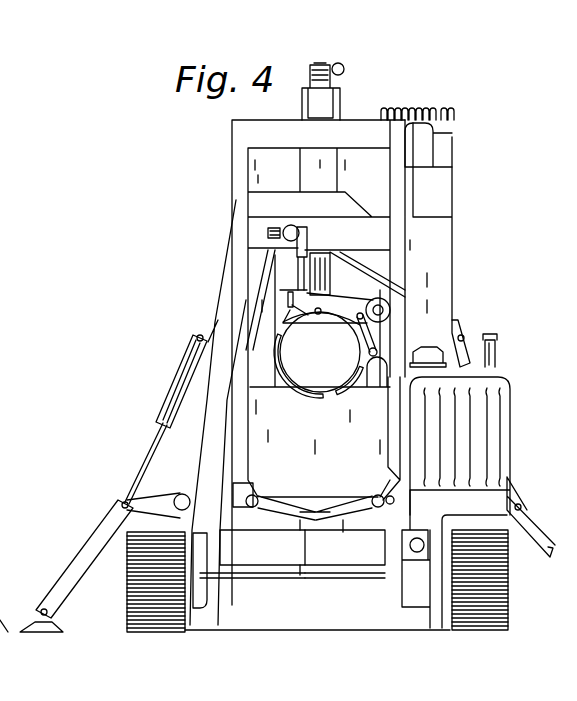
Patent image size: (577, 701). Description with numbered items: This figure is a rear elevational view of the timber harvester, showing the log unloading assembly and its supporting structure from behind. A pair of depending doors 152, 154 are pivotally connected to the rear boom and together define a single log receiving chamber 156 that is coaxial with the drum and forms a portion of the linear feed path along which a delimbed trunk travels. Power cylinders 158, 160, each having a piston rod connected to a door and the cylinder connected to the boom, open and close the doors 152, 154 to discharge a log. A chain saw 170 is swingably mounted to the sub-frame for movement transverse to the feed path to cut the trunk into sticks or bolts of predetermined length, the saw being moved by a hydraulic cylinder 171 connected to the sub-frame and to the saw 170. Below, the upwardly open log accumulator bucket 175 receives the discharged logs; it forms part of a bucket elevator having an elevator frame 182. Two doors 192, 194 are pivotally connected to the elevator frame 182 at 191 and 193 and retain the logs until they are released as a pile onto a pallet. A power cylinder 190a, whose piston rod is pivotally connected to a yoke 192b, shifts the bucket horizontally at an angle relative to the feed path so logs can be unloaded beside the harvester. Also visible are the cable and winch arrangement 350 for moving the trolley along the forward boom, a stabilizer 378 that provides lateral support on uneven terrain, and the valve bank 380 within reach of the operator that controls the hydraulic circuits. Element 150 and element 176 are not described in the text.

The cable and winch arrangement 350 is at (338, 63).
The valve bank 380 is at (430, 92).
The elevator frame 182 is at (240, 158).
The power cylinder 190a is at (293, 216).
The spindle assembly 150 is at (334, 262).
The yoke 192b is at (383, 233).
The power cylinder 160 is at (380, 287).
The chain saw 170 is at (400, 303).
The hydraulic cylinder 171 is at (380, 340).
The door 154 is at (350, 325).
The door 152 is at (283, 367).
The log receiving chamber 156 is at (307, 372).
The power cylinder 158 is at (247, 283).
The log accumulator bucket 175 is at (262, 455).
The pivot plate 176 is at (232, 500).
The pivotal connection 191 is at (266, 497).
The pivotal connection 193 is at (377, 500).
The door 192 is at (290, 523).
The door 194 is at (338, 520).
The stabilizer 378 is at (92, 538).